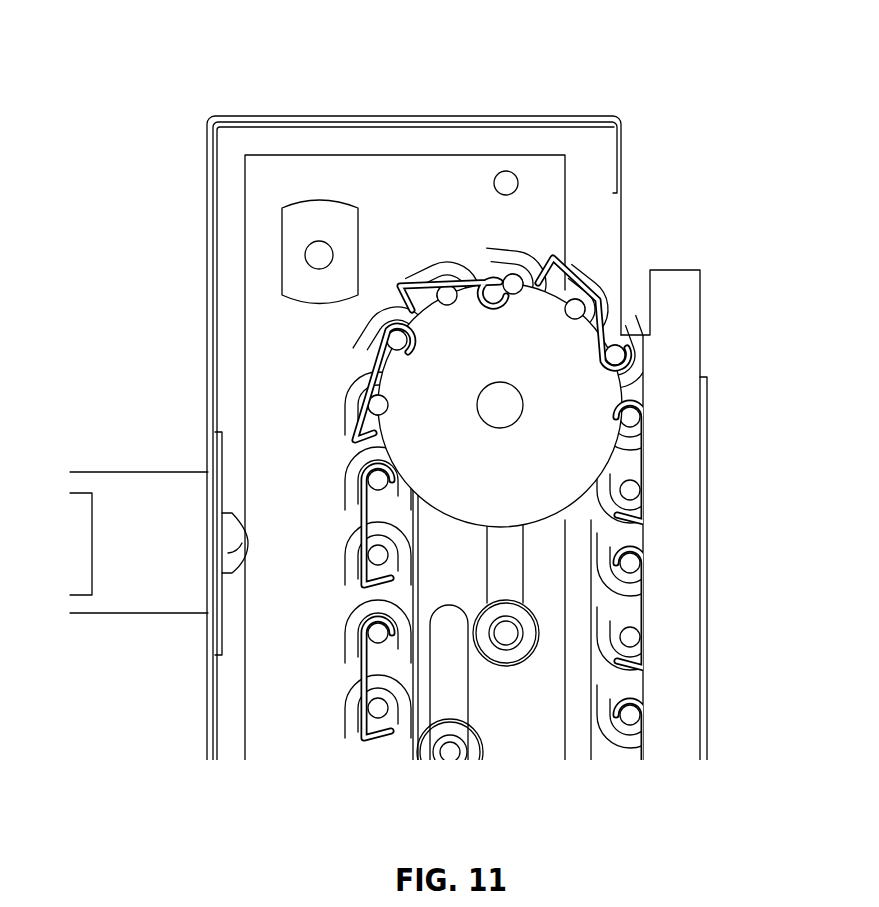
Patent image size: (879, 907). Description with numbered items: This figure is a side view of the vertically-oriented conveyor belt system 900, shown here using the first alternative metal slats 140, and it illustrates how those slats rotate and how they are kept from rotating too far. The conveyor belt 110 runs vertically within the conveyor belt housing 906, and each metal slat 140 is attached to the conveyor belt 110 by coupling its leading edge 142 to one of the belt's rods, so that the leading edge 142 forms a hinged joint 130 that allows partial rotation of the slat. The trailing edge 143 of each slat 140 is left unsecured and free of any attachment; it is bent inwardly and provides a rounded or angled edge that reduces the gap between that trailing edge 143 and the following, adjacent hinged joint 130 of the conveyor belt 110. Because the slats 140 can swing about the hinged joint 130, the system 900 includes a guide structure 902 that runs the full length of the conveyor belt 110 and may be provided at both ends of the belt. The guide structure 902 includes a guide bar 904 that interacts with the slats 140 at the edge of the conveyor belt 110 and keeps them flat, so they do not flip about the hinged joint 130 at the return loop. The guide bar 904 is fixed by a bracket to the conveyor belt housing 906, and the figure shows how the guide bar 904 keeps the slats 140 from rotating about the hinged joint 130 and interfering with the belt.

The vertical conveyor belt system 900 is at (150, 97).
The conveyor belt housing 906 is at (227, 372).
The guide bar 904 is at (686, 285).
The guide structure 902 is at (708, 522).
The conveyor belt 110 is at (298, 790).
The hinged joint 130 is at (517, 255).
The metal slat 140 is at (596, 290).
The trailing edge 143 is at (560, 262).
The leading edge 142 is at (640, 366).